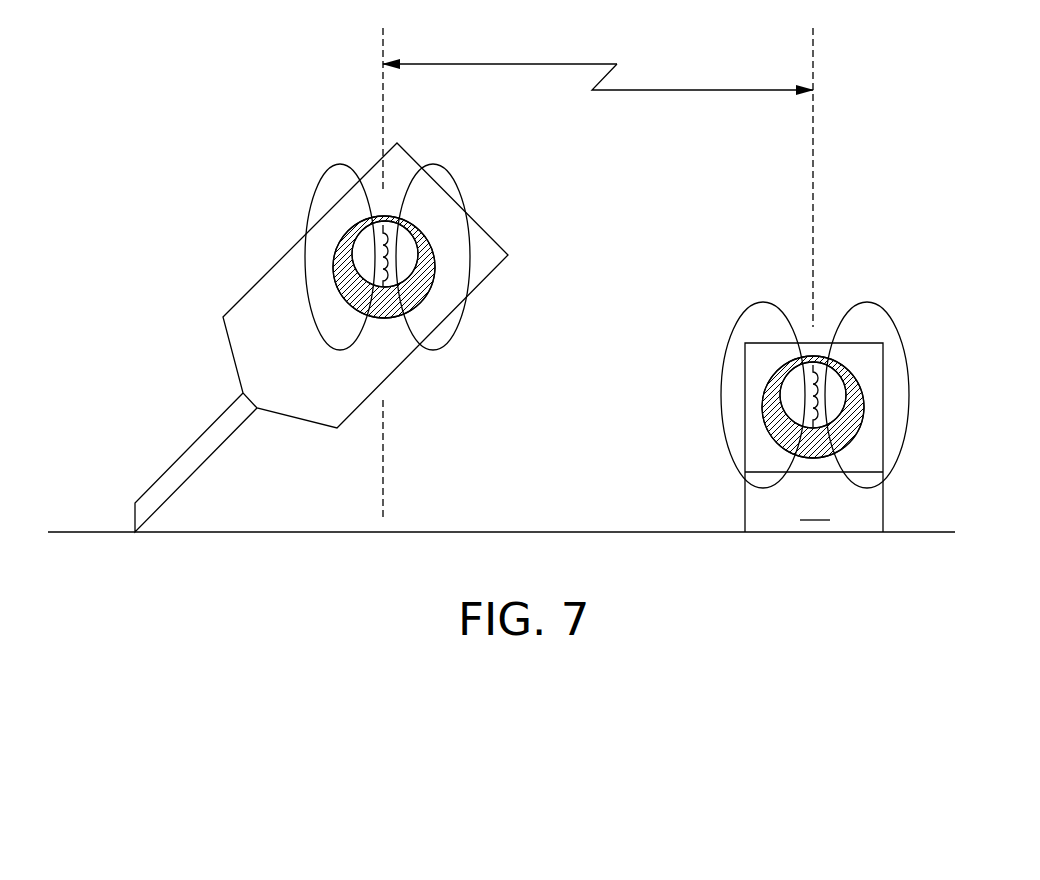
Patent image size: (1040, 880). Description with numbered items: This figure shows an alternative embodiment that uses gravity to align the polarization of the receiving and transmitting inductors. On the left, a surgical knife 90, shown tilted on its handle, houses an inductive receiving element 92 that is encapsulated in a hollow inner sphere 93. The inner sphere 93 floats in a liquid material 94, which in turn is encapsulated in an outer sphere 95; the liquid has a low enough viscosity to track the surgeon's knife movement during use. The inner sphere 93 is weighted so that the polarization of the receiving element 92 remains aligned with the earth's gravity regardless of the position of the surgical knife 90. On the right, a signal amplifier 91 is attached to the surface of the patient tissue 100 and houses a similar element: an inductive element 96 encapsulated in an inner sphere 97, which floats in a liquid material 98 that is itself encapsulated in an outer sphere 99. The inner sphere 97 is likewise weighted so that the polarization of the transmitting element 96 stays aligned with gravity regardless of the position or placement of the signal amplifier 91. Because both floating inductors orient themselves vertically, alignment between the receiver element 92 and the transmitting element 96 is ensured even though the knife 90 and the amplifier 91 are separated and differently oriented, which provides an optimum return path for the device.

The surgical knife 90 is at (218, 333).
The signal amplifier 91 is at (814, 437).
The inductive receiving element 92 is at (380, 237).
The hollow inner sphere 93 is at (337, 247).
The liquid material 94 is at (333, 272).
The outer sphere 95 is at (350, 308).
The inductive receiving element 96 is at (823, 366).
The inner sphere 97 is at (857, 390).
The liquid material 98 is at (857, 407).
The outer sphere 99 is at (857, 432).
The patient tissue 100 is at (918, 532).